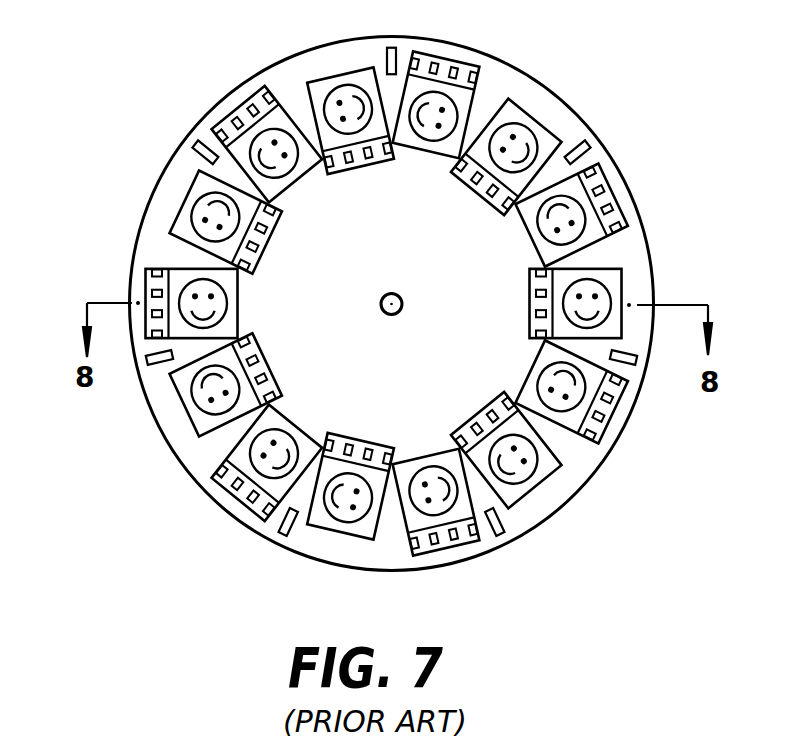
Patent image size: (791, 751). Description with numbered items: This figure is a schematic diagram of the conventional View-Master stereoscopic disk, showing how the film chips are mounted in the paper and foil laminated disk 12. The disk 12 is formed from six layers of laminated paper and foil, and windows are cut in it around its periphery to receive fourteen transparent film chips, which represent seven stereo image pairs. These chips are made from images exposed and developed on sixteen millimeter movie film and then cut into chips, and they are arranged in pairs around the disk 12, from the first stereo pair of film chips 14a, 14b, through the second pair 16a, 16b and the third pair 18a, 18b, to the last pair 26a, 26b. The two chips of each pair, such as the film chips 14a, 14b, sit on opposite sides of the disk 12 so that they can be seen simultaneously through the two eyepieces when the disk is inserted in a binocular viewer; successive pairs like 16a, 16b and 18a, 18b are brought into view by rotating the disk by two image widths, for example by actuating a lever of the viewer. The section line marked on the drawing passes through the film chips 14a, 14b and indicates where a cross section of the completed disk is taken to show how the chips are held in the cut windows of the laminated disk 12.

The paper and foil laminated disk 12 is at (572, 130).
The film chip of first stereo image pair 14a is at (148, 279).
The film chip of first stereo image pair 14b is at (621, 270).
The film chip of second stereo image pair 16a is at (240, 497).
The film chip of second stereo image pair 16b is at (535, 120).
The film chip of third stereo image pair 18a is at (453, 550).
The film chip of third stereo image pair 18b is at (333, 74).
The film chip of seventh stereo image pair 26a is at (240, 108).
The film chip of seventh stereo image pair 26b is at (187, 207).